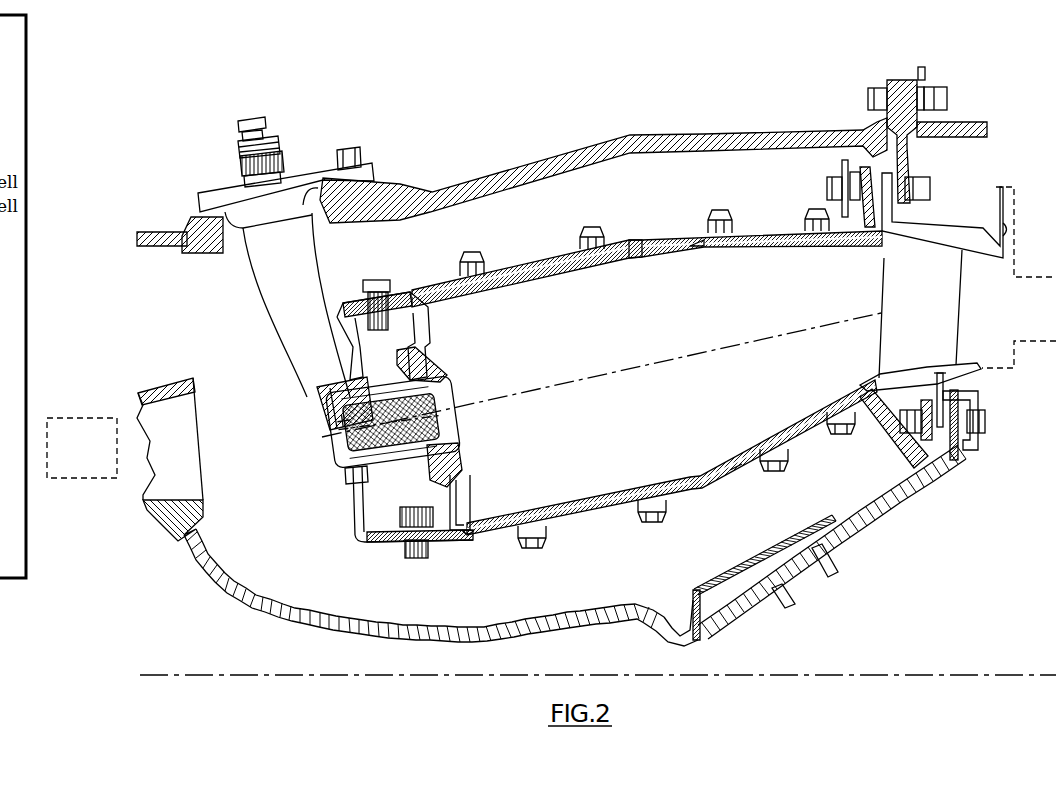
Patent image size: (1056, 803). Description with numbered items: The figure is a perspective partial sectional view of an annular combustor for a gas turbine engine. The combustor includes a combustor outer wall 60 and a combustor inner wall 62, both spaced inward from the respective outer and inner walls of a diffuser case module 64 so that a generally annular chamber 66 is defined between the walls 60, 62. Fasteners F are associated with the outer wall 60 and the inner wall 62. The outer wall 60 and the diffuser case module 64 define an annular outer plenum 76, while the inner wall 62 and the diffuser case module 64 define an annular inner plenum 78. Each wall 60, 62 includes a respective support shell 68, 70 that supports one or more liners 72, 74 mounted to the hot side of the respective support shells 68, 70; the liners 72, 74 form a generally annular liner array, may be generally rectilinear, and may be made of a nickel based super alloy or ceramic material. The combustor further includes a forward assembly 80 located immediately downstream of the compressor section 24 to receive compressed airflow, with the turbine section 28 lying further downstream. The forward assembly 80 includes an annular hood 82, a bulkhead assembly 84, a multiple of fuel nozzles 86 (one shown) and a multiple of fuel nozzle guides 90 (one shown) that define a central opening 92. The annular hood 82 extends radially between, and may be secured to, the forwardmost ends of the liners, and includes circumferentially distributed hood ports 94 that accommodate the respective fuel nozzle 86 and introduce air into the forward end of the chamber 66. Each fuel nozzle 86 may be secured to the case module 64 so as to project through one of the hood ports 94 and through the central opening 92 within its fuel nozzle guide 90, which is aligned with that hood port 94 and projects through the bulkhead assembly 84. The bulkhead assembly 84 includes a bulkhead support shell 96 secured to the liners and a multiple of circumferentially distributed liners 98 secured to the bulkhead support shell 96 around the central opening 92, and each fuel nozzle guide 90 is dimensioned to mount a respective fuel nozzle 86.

The compressor section 24 is at (72, 459).
The turbine section 28 is at (1028, 315).
The combustor outer wall 60 is at (647, 246).
The combustor inner wall 62 is at (735, 494).
The diffuser case module 64 is at (808, 122).
The chamber 66 is at (654, 372).
The support shell 68 is at (678, 228).
The support shell 70 is at (689, 490).
The liner 72 is at (701, 246).
The liner 74 is at (739, 441).
The annular outer plenum 76 is at (640, 196).
The annular inner plenum 78 is at (560, 590).
The forward assembly 80 is at (397, 425).
The annular hood 82 is at (362, 530).
The bulkhead assembly 84 is at (448, 325).
The fuel nozzle 86 is at (313, 407).
The fuel nozzle guide 90 is at (472, 459).
The central opening 92 is at (443, 379).
The hood port 94 is at (350, 484).
The bulkhead support shell 96 is at (470, 533).
The liner 98 is at (472, 496).
The fastener F is at (486, 266).